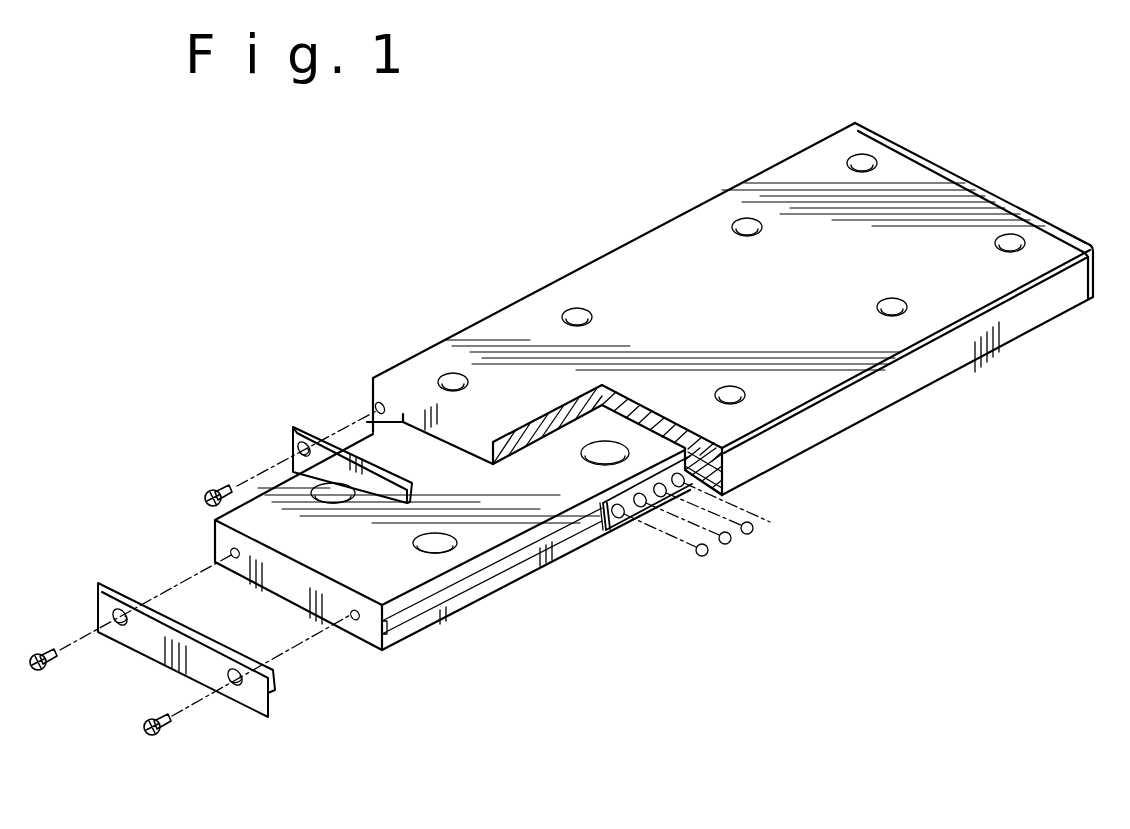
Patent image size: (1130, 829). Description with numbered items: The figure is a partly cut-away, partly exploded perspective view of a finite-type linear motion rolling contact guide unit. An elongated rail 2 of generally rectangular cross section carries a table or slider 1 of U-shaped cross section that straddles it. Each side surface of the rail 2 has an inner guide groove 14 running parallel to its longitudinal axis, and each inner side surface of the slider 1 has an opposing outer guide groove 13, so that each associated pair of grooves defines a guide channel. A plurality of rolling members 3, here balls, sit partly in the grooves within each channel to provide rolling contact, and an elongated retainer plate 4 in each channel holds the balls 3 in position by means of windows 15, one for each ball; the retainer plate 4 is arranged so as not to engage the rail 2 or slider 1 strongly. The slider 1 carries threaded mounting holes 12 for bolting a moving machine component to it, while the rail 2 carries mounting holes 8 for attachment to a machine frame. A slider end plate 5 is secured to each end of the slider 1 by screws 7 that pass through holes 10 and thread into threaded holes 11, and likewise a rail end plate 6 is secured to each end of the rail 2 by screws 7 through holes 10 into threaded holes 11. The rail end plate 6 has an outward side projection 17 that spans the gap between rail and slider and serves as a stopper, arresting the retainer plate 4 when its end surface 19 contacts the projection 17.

The slider 1 is at (578, 287).
The rail 2 is at (273, 530).
The rolling members 3 is at (708, 554).
The retainer plate 4 is at (606, 530).
The slider end plate 5 is at (300, 426).
The rail end plate 6 is at (252, 693).
The screws 7 is at (204, 497).
The mounting holes 8 is at (440, 550).
The holes 10 is at (300, 447).
The threaded holes 11 is at (378, 404).
The mounting holes 12 is at (452, 378).
The outer guide groove 13 is at (735, 480).
The inner guide groove 14 is at (507, 566).
The windows 15 is at (622, 516).
The outward side projection 17 is at (98, 590).
The end surface 19 is at (598, 530).